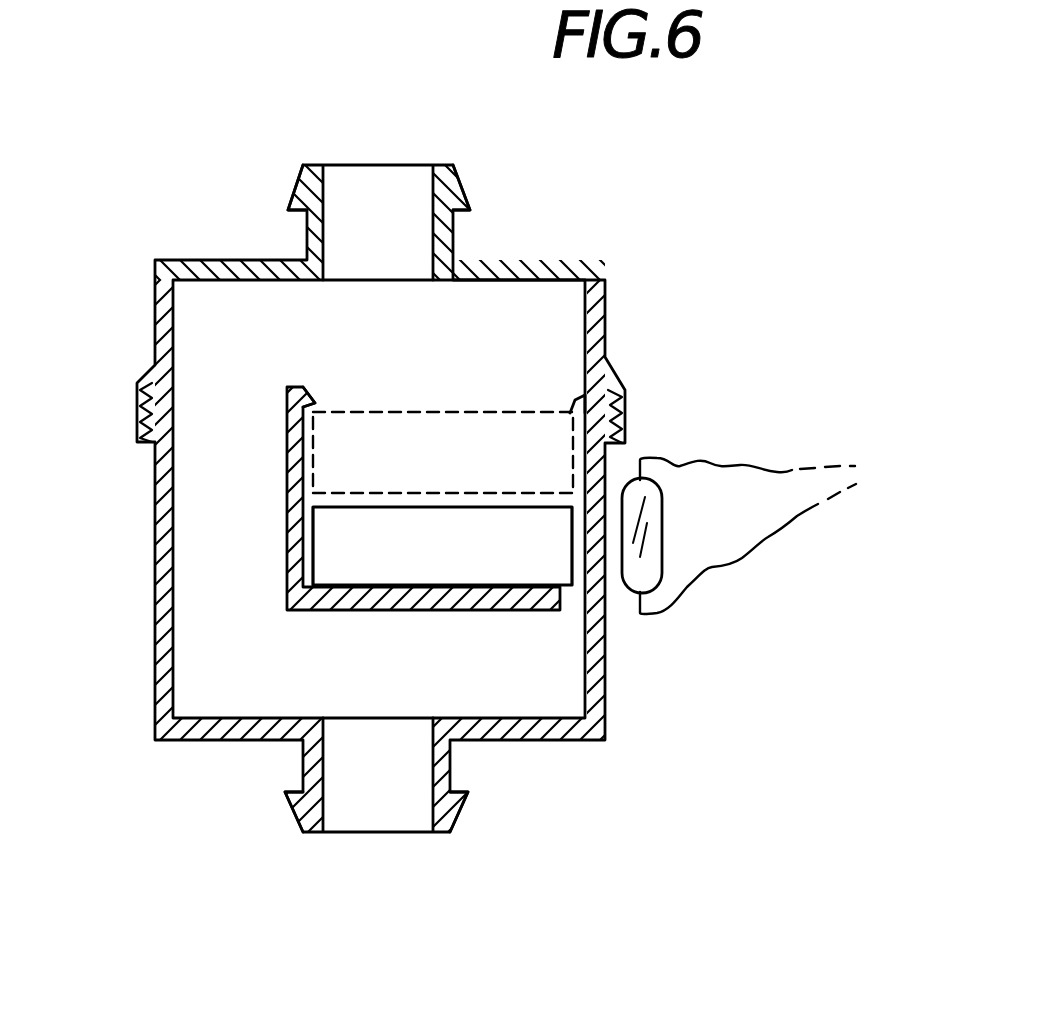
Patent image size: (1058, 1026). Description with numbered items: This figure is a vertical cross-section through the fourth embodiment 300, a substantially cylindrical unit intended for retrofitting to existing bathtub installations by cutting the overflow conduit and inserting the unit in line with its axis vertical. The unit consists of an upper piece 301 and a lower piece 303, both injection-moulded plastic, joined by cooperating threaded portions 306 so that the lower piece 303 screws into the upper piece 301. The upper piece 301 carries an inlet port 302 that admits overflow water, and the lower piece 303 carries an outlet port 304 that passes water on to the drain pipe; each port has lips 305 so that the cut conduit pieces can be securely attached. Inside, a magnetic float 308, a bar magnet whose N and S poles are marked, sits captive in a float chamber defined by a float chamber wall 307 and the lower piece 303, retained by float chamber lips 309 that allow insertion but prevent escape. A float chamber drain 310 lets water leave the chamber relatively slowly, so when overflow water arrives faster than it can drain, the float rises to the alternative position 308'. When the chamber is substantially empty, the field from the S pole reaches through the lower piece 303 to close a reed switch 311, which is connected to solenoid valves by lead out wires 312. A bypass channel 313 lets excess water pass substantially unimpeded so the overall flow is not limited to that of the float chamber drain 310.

The fourth embodiment 300 is at (156, 792).
The upper piece 301 is at (608, 291).
The inlet port 302 is at (470, 137).
The lower piece 303 is at (606, 705).
The outlet port 304 is at (462, 857).
The lips 305 is at (468, 190).
The cooperating threaded portions 306 is at (146, 450).
The float chamber wall 307 is at (325, 610).
The magnetic float 308 is at (442, 601).
The alternative position 308' is at (443, 420).
The float chamber lips 309 is at (318, 405).
The float chamber drain 310 is at (572, 610).
The reed switch 311 is at (662, 507).
The lead out wires 312 is at (797, 513).
The bypass channel 313 is at (218, 438).